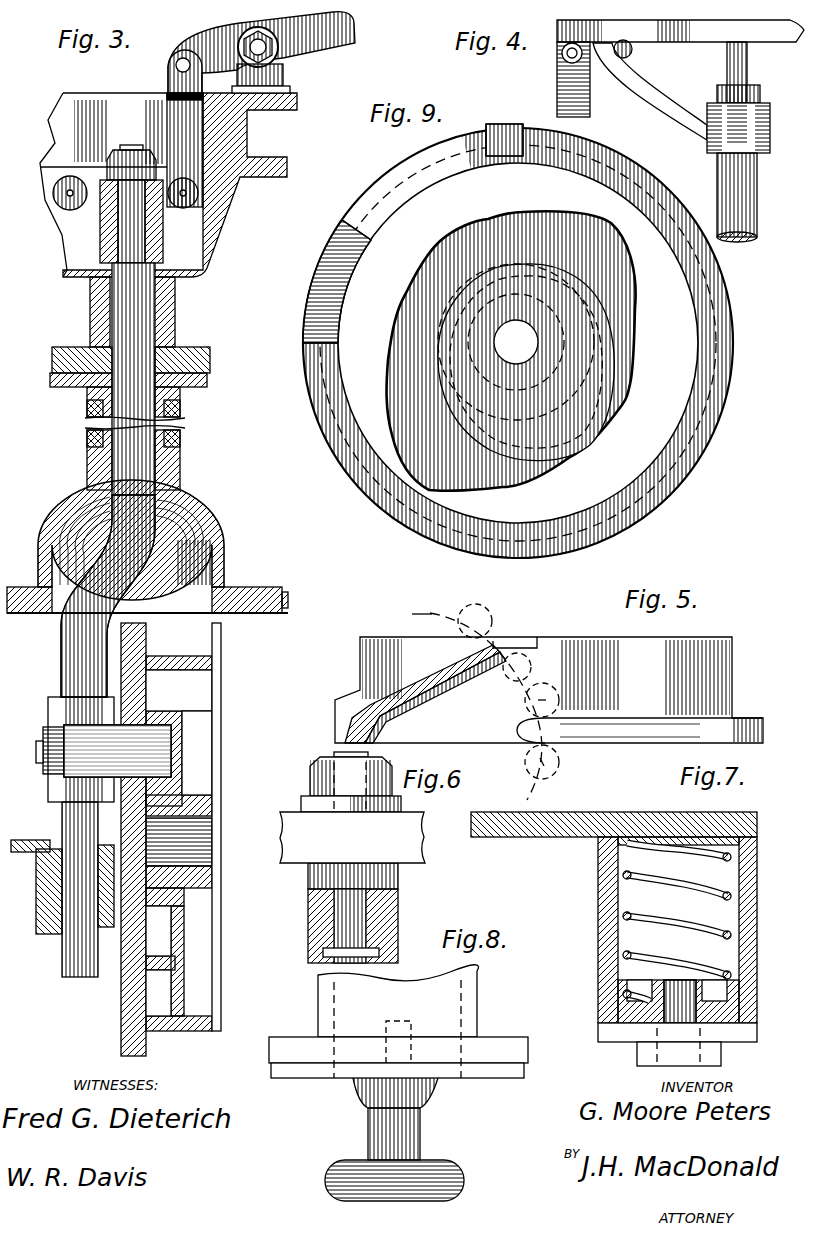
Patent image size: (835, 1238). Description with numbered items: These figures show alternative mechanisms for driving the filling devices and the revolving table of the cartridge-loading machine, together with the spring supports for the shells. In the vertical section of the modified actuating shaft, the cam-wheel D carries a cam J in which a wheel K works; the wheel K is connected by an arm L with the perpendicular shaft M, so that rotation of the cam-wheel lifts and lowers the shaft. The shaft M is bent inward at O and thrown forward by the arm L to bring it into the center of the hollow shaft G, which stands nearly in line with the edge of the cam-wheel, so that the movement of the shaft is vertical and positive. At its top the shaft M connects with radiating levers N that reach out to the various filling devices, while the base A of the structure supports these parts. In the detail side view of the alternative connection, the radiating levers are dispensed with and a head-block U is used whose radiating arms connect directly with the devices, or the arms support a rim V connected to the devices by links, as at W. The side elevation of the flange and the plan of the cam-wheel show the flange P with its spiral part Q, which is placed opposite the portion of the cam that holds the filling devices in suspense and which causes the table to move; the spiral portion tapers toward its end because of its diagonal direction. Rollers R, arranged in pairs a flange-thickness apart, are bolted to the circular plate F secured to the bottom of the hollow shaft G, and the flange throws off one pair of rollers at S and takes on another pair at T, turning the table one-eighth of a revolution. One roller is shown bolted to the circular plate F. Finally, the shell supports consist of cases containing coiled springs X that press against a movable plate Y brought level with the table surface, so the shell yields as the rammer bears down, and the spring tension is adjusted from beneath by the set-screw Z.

In FIG. 3, the base plate A is at (130, 352).
In FIG. 3, the cam-wheel D is at (179, 846).
In FIG. 5, the circular plate F is at (421, 605).
In FIG. 6, the circular plate F is at (352, 837).
In FIG. 3, the hollow shaft G is at (131, 420).
In FIG. 3, the cam J is at (179, 843).
In FIG. 9, the cam J is at (513, 354).
In FIG. 3, the wheel K is at (117, 751).
In FIG. 3, the arm L is at (75, 749).
In FIG. 3, the perpendicular shaft M is at (112, 421).
In FIG. 3, the radiating levers N is at (261, 109).
In FIG. 3, the bend of shaft O is at (71, 801).
In FIG. 3, the flange P is at (166, 846).
In FIG. 9, the flange P is at (518, 343).
In FIG. 5, the flange P is at (549, 690).
In FIG. 9, the spiral part of flange Q is at (403, 223).
In FIG. 5, the spiral part of flange Q is at (425, 694).
In FIG. 5, the rollers R is at (504, 700).
In FIG. 6, the rollers R is at (357, 857).
In FIG. 3, the roller release point S is at (228, 827).
In FIG. 5, the roller release point S is at (521, 630).
In FIG. 5, the roller engagement point T is at (629, 728).
In FIG. 4, the head-block U is at (651, 90).
In FIG. 4, the rim V is at (720, 20).
In FIG. 4, the link W is at (557, 93).
In FIG. 7, the coiled springs X is at (677, 922).
In FIG. 7, the movable plate Y is at (614, 927).
In FIG. 8, the set-screw Z is at (398, 1083).